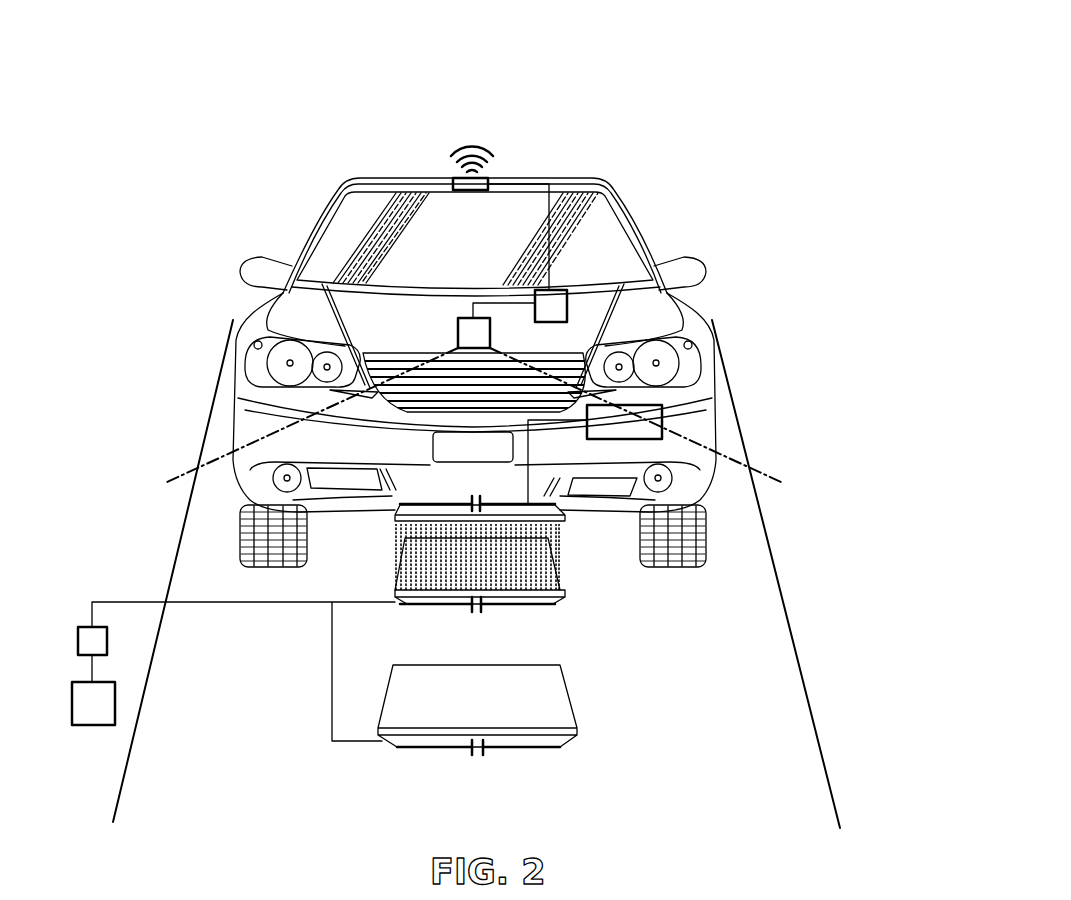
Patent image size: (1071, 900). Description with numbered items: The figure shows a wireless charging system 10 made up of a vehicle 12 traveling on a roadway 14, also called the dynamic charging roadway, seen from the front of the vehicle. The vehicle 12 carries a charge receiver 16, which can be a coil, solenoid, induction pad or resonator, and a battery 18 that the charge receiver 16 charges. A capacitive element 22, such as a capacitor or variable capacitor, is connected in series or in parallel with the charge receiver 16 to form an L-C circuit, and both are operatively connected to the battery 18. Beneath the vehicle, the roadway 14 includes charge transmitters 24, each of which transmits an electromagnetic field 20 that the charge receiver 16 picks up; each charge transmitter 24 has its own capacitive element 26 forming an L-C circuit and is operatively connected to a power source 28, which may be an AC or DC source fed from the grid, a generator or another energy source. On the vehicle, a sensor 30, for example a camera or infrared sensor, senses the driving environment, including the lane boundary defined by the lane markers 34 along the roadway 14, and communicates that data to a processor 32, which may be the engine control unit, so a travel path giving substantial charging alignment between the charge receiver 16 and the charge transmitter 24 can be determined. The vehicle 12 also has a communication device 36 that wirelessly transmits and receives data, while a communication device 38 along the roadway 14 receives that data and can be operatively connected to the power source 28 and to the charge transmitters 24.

The wireless charging system 10 is at (716, 64).
The vehicle 12 is at (577, 177).
The roadway 14 is at (849, 620).
The charge receiver 16 is at (562, 517).
The battery 18 is at (663, 412).
The electromagnetic field 20 is at (395, 552).
The capacitive element 22 is at (490, 497).
The charge transmitter 24 is at (562, 592).
The capacitive element 26 is at (486, 609).
The power source 28 is at (72, 705).
The sensor 30 is at (458, 328).
The processor 32 is at (567, 300).
The lane markers 34 is at (180, 538).
The communication device 36 is at (455, 180).
The communication device 38 is at (78, 642).